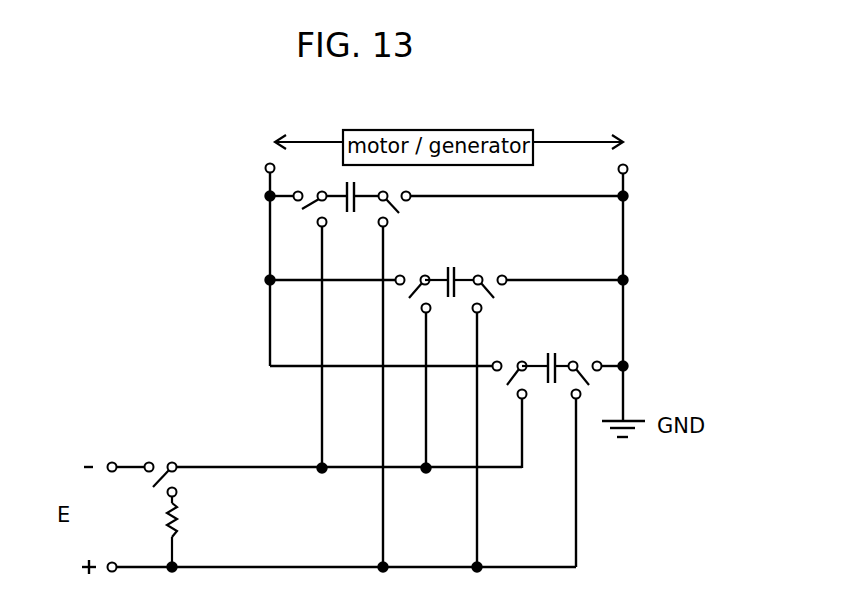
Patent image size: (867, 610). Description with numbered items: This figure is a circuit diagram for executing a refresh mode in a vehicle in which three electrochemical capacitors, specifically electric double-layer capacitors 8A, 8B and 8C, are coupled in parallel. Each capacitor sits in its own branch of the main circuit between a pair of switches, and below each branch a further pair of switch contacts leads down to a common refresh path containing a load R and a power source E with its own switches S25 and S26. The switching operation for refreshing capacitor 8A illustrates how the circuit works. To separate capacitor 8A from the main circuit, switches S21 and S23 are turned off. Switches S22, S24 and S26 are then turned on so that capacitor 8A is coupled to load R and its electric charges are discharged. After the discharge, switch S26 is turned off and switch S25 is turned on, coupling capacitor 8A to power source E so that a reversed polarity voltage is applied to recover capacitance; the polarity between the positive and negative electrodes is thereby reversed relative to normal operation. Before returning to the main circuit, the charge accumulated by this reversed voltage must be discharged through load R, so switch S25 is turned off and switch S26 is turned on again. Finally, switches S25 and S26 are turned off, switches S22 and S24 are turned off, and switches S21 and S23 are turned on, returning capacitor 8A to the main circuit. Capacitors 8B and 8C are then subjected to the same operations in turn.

The switch S21 is at (310, 186).
The switch S22 is at (313, 217).
The switch S23 is at (396, 191).
The switch S24 is at (393, 215).
The switch S25 is at (161, 457).
The switch S26 is at (182, 480).
The capacitor 8A is at (349, 222).
The capacitor 8B is at (457, 257).
The capacitor 8C is at (555, 345).
The load R is at (185, 531).